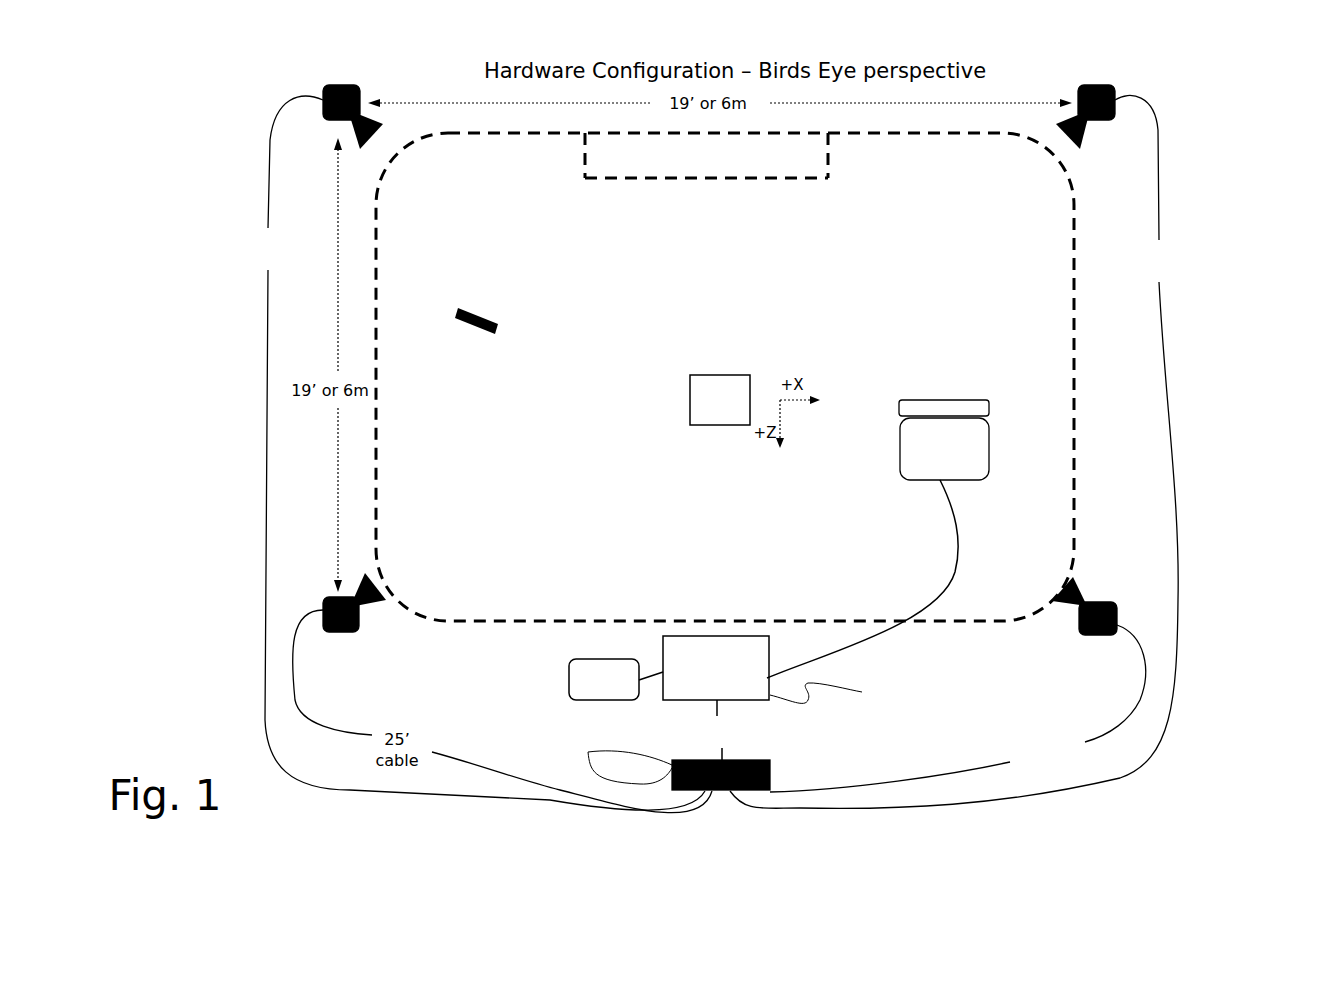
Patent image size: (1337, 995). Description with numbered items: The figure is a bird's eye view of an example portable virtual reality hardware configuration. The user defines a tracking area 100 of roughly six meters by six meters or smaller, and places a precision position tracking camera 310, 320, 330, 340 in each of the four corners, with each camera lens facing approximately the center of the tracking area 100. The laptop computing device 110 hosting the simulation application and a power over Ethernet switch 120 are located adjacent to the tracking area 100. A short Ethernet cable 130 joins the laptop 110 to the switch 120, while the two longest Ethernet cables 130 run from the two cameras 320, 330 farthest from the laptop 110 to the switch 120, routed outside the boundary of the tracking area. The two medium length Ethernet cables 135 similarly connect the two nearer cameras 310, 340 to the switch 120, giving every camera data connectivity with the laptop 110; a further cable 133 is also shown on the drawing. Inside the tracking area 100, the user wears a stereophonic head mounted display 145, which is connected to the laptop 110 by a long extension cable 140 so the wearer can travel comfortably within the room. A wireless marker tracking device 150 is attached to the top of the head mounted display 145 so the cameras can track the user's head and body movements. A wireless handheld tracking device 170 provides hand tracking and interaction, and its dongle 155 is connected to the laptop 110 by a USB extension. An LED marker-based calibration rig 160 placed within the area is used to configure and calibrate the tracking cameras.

The tracking area 100 is at (1075, 232).
The laptop computing device 110 is at (697, 636).
The power over Ethernet switch 120 is at (672, 789).
The Ethernet cable 130 is at (793, 738).
The 25 foot cable 133 is at (1137, 697).
The medium length Ethernet cable 135 is at (268, 190).
The head mounted display extension cable 140 is at (958, 542).
The head mounted display 145 is at (902, 478).
The marker tracking device 150 is at (952, 400).
The handheld tracking device dongle 155 is at (576, 660).
The calibration rig 160 is at (690, 425).
The wireless handheld tracking device 170 is at (497, 305).
The tracking camera 310 is at (323, 603).
The tracking camera 320 is at (331, 90).
The tracking camera 330 is at (1113, 93).
The tracking camera 340 is at (1117, 608).